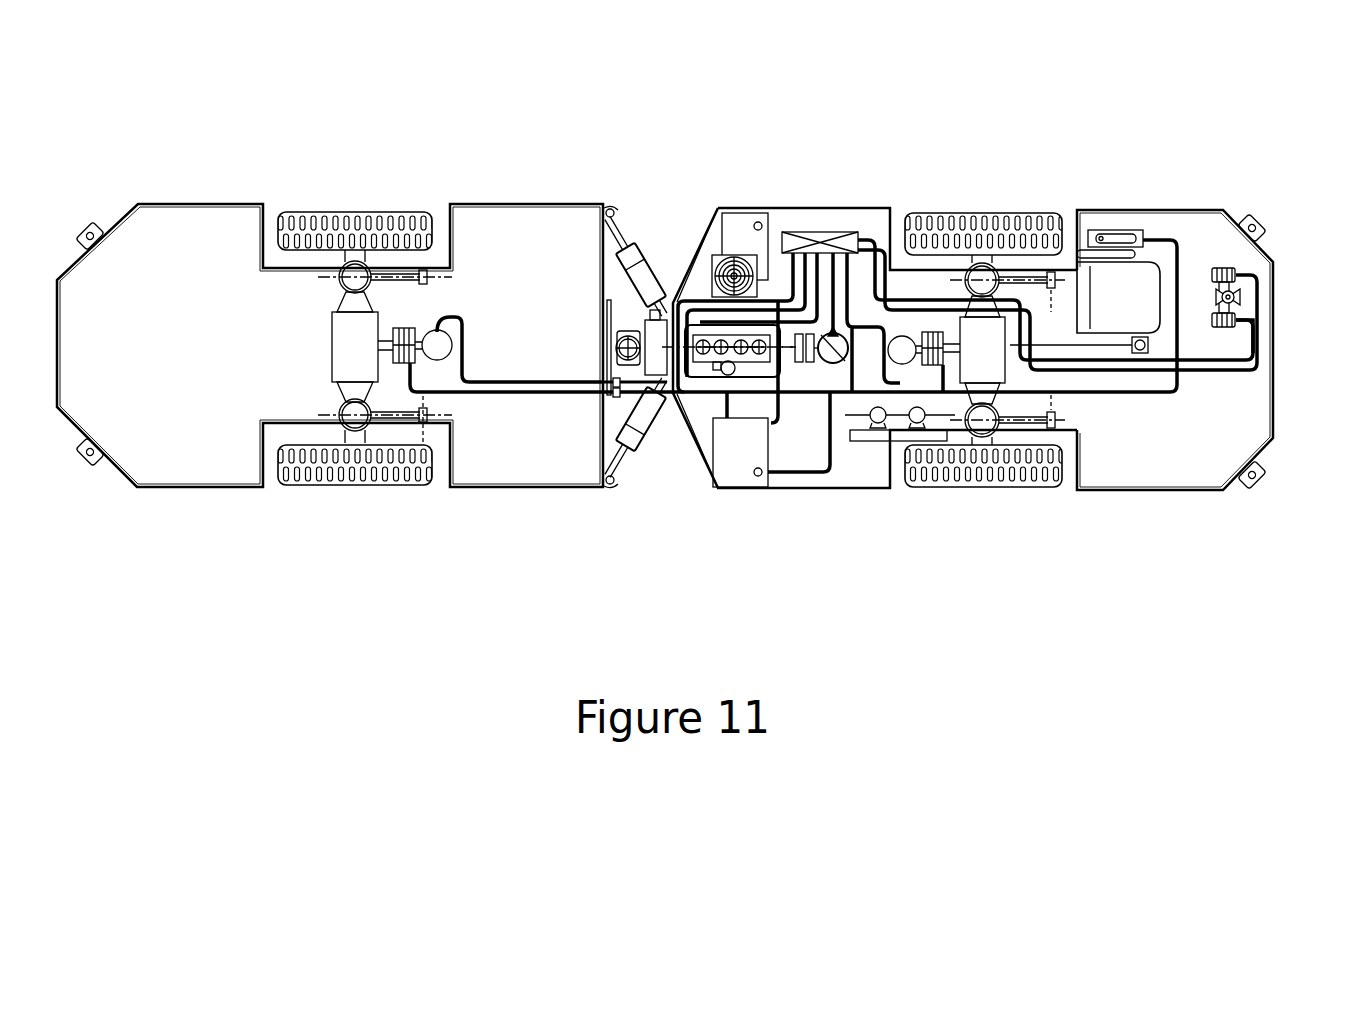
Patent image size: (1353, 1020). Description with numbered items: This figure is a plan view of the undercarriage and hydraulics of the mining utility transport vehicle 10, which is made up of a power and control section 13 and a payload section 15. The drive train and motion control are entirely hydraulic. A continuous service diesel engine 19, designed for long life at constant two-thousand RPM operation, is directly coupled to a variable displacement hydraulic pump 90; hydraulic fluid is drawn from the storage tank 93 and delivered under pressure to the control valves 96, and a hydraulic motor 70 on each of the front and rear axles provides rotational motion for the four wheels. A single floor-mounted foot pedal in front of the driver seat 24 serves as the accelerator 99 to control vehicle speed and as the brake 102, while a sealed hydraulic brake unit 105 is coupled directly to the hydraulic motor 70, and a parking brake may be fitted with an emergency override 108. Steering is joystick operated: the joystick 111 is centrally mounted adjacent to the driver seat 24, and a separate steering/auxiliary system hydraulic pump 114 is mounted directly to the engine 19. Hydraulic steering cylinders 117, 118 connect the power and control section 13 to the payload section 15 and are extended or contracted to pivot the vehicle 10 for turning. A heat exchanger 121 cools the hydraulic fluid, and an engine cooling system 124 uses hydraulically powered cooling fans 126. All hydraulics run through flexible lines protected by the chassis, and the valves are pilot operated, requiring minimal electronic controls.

The vehicle 10 is at (540, 117).
The power and control section 13 is at (1155, 463).
The payload section 15 is at (213, 455).
The diesel engine 19 is at (703, 340).
The driver seat 24 is at (1111, 309).
The hydraulic motor 70 is at (437, 345).
The variable displacement hydraulic pump 90 is at (832, 360).
The storage tank 93 is at (742, 468).
The control valves 96 is at (832, 240).
The accelerator 99 is at (1238, 320).
The brake 102 is at (1238, 275).
The hydraulic brake unit 105 is at (393, 345).
The emergency override 108 is at (1118, 238).
The joystick 111 is at (1148, 353).
The steering/auxiliary system hydraulic pump 114 is at (728, 372).
The hydraulic steering cylinder 117 is at (621, 247).
The hydraulic steering cylinder 118 is at (617, 483).
The heat exchanger 121 is at (735, 268).
The engine cooling system 124 is at (878, 425).
The cooling fans 126 is at (915, 425).